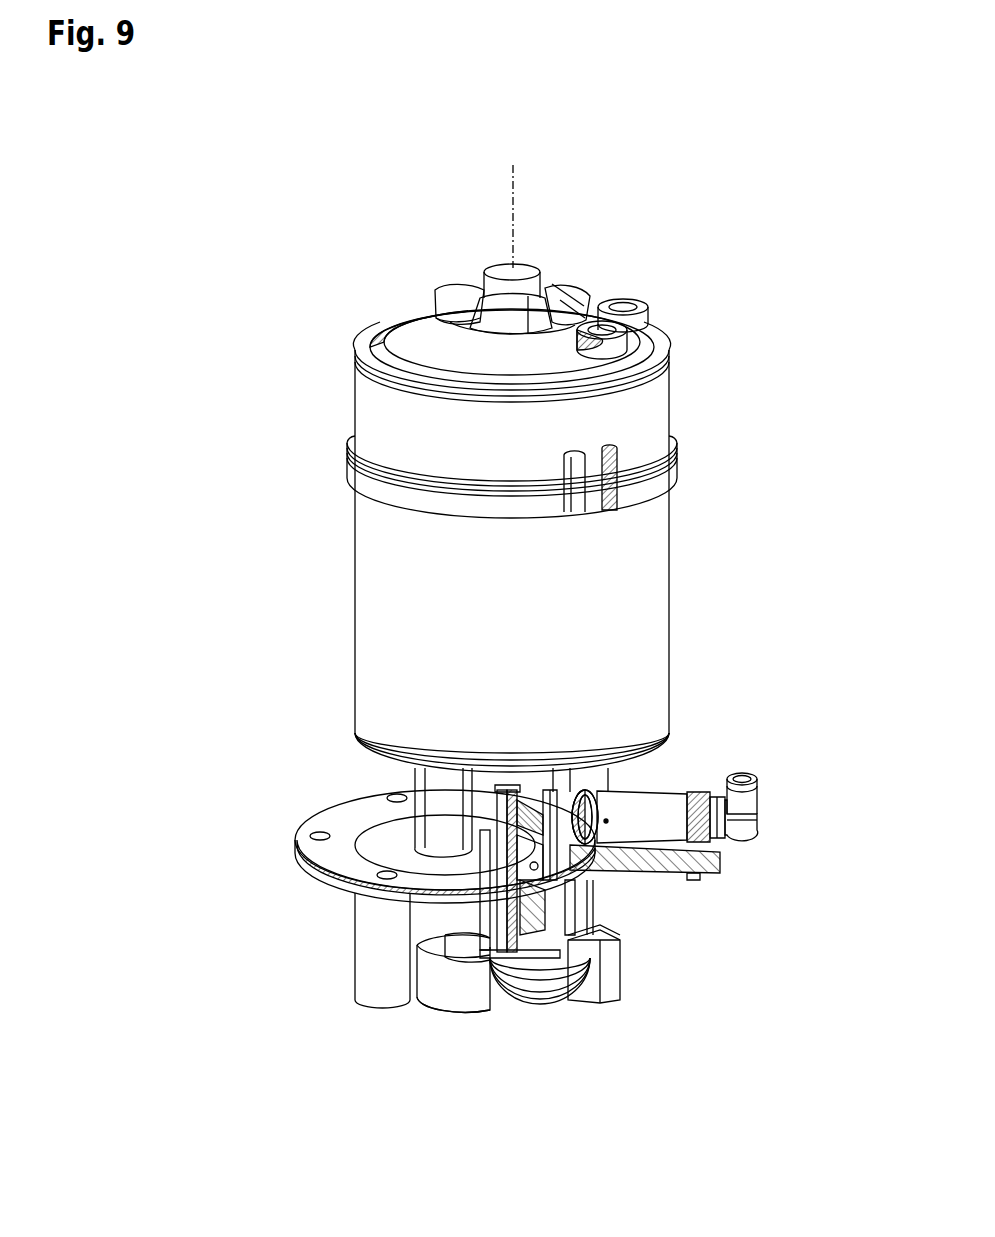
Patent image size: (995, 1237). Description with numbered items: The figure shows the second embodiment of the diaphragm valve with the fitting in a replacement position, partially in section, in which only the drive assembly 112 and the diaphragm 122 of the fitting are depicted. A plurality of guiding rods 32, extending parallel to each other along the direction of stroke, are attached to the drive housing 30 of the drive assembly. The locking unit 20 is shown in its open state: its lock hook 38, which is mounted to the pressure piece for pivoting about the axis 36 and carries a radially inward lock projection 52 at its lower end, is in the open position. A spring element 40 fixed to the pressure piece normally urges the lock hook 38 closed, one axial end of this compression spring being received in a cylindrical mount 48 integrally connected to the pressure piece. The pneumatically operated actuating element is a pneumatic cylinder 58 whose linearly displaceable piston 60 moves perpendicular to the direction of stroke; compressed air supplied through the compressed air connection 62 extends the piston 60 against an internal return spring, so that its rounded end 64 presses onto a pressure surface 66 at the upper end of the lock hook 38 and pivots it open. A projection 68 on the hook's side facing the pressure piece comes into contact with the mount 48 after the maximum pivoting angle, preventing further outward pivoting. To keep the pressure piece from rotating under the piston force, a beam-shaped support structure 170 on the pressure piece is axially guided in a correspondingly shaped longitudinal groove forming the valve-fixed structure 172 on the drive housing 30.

The drive assembly 112 is at (274, 350).
The drive housing 30 is at (673, 542).
The locking unit 20 is at (734, 737).
The guiding rods 32 is at (365, 923).
The support structure 170 is at (467, 832).
The valve-fixed structure 172 is at (500, 882).
The cylindrical mount 48 is at (480, 800).
The spring element 40 is at (507, 800).
The projection 68 is at (518, 800).
The axis 36 is at (570, 885).
The lock hook 38 is at (558, 898).
The lock projection 52 is at (592, 957).
The piston 60 is at (662, 812).
The end of the piston 64 is at (597, 778).
The pneumatic cylinder 58 is at (750, 812).
The compressed air connection 62 is at (750, 796).
The pressure surface 66 is at (583, 869).
The diaphragm 122 is at (554, 1012).